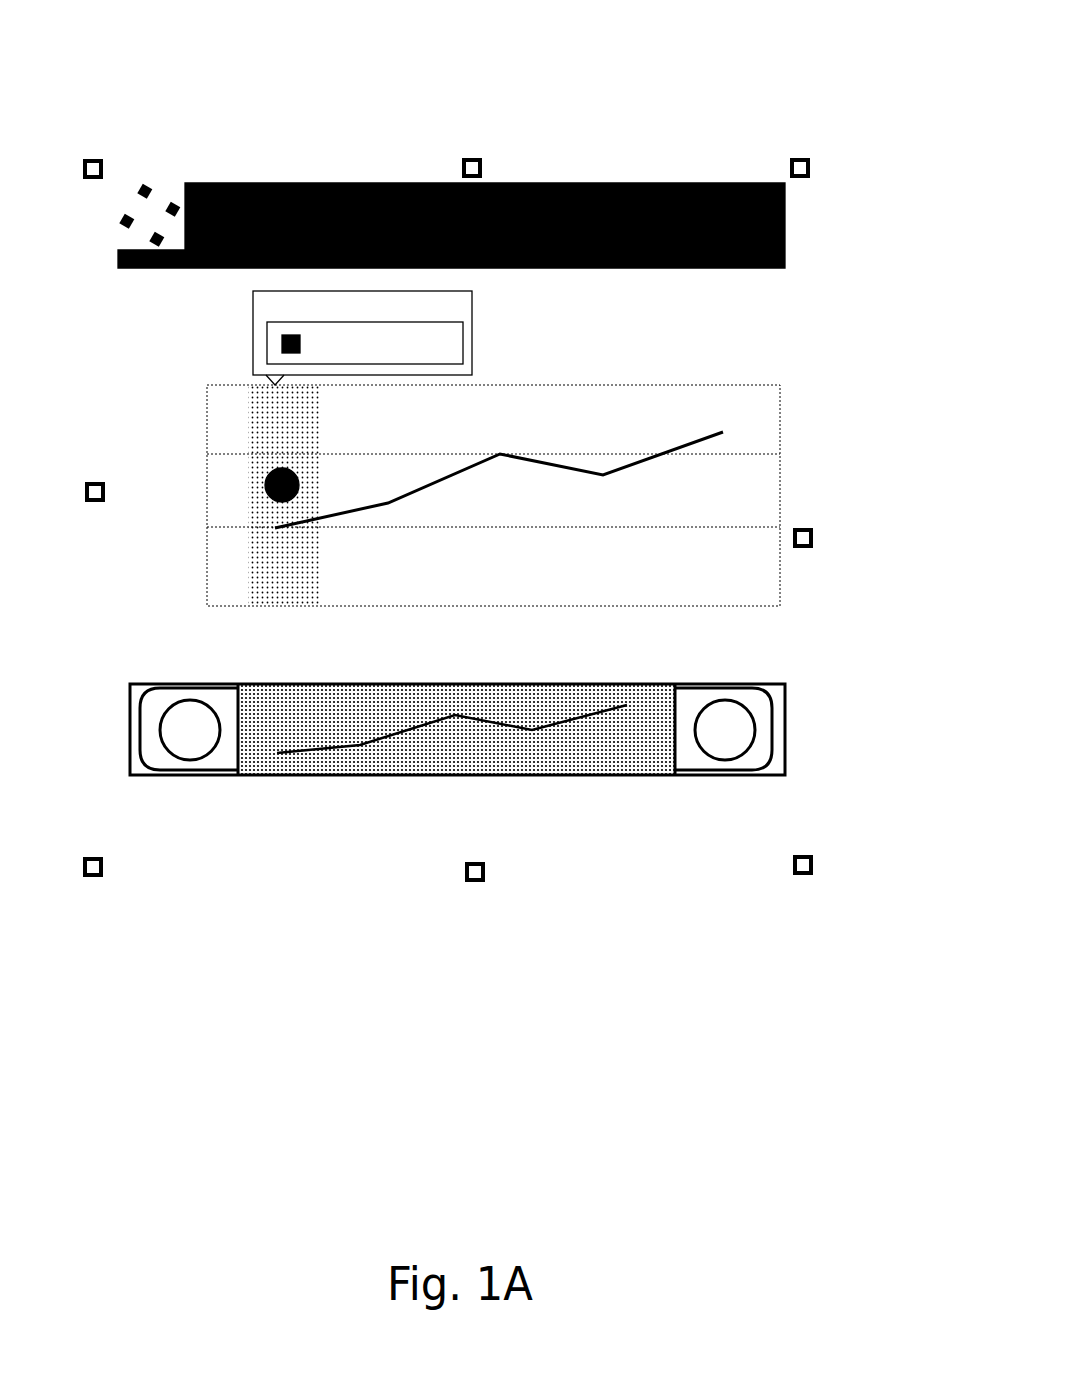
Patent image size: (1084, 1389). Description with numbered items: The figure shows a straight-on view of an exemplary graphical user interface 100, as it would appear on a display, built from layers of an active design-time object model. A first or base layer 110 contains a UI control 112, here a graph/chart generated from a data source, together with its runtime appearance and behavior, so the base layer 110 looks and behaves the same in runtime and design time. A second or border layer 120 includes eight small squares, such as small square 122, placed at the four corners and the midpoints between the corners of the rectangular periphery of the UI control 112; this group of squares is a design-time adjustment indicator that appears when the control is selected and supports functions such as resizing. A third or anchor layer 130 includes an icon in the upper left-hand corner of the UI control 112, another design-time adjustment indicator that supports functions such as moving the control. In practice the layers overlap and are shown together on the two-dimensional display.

The graphical user interface 100 is at (750, 80).
The base layer 110 is at (378, 547).
The UI control 112 is at (634, 421).
The border layer 120 is at (812, 853).
The small square 122 is at (88, 880).
The anchor layer 130 is at (112, 215).